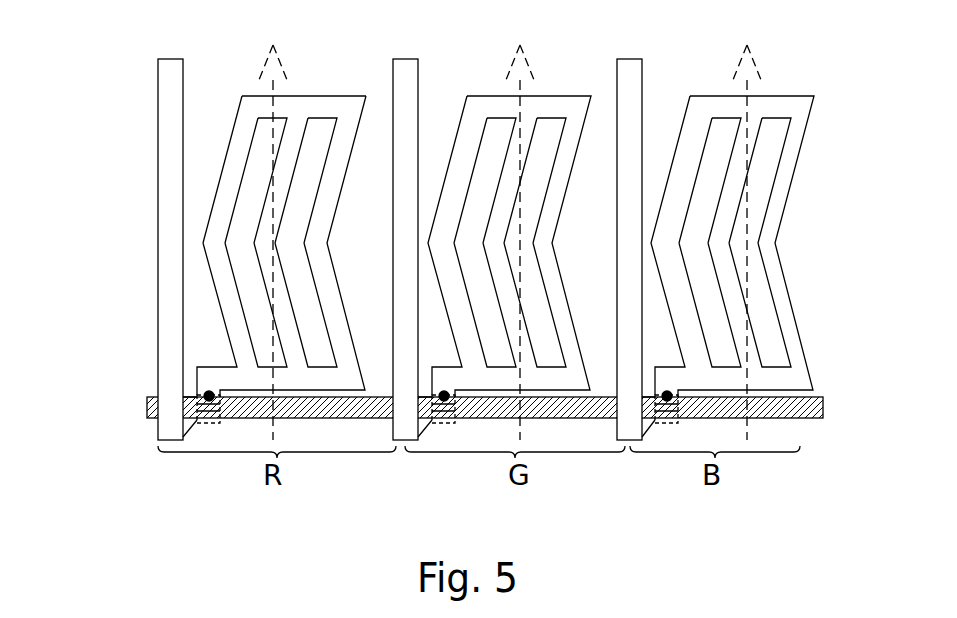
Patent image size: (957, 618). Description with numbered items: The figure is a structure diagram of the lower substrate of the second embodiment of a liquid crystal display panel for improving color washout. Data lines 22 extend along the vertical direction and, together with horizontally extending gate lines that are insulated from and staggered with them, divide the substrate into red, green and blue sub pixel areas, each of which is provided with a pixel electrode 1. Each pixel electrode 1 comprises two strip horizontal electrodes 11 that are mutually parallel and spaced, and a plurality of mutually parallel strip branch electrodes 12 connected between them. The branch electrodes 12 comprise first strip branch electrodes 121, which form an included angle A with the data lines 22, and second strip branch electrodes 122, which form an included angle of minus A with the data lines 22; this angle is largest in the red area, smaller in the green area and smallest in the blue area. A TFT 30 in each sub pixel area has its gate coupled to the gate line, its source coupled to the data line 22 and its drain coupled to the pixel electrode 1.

The pixel electrode 1 is at (191, 209).
The strip horizontal electrode 11 is at (293, 108).
The strip branch electrode 12 is at (177, 245).
The first strip branch electrode 121 is at (222, 273).
The second strip branch electrode 122 is at (223, 205).
The data line 22 is at (170, 128).
The TFT 30 is at (193, 390).